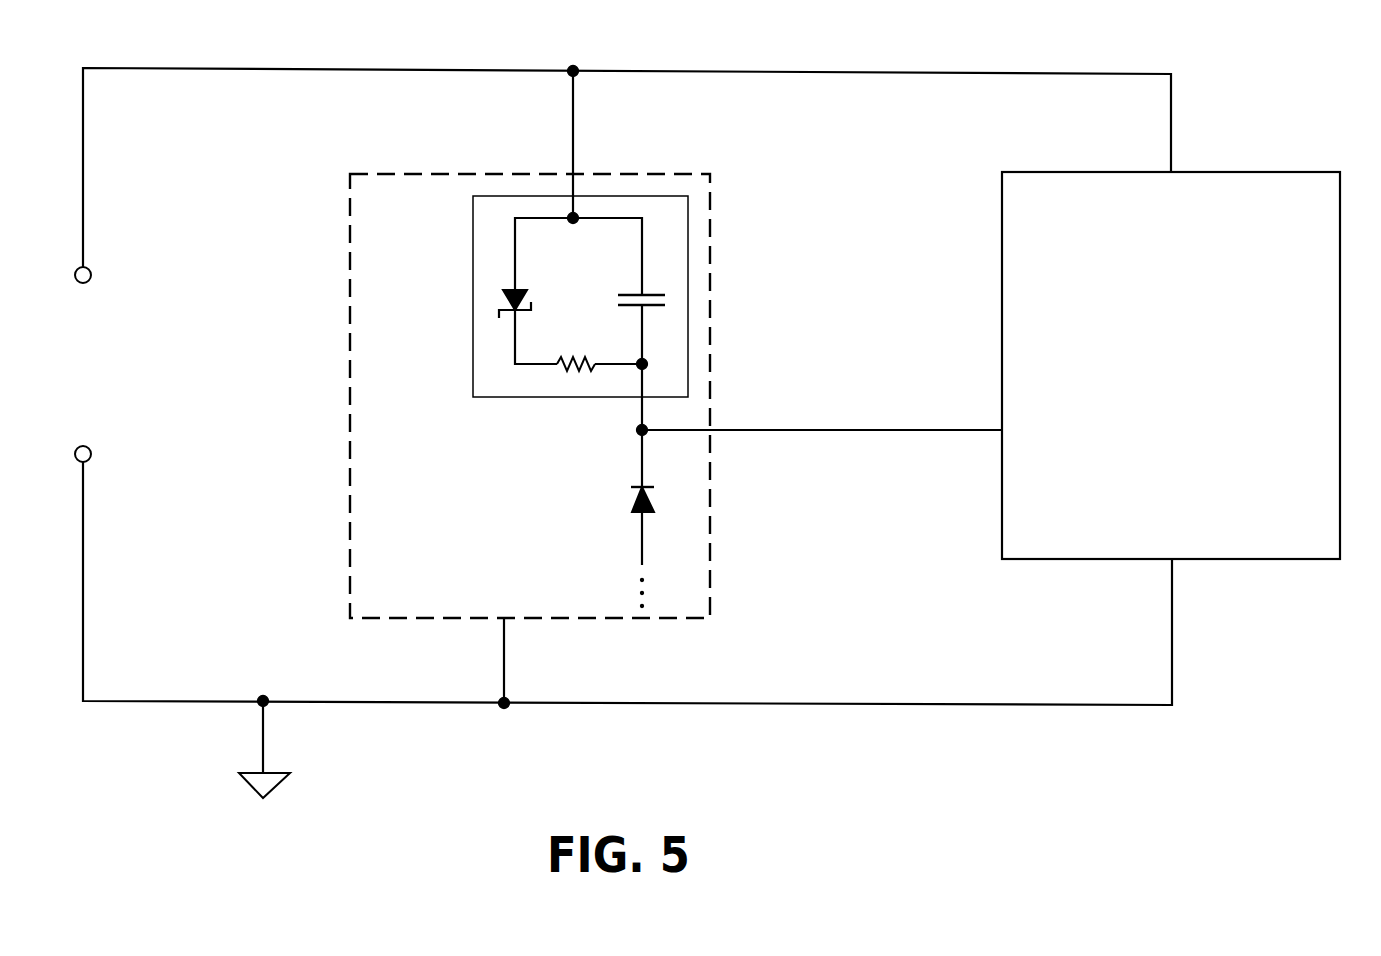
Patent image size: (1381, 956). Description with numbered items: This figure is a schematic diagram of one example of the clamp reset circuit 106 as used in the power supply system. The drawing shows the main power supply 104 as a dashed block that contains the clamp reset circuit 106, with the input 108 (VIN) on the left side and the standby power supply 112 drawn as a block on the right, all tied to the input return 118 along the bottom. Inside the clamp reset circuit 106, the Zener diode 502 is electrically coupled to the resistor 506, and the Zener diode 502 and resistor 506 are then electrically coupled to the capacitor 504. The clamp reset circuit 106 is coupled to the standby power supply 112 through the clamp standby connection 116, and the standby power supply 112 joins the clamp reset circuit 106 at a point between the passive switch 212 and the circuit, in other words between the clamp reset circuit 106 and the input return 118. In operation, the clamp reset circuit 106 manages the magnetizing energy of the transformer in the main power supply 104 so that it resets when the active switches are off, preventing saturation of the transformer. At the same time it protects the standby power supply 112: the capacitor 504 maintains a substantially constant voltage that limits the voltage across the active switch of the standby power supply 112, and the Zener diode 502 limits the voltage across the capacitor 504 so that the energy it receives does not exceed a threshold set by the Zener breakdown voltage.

The main power supply 104 is at (335, 383).
The clamp reset circuit 106 is at (468, 212).
The input 108 is at (123, 357).
The standby power supply 112 is at (1288, 160).
The clamp standby connection 116 is at (829, 413).
The input return 118 is at (238, 760).
The passive switch D1 212 is at (595, 492).
The Zener diode 502 is at (487, 305).
The capacitor 504 is at (668, 300).
The resistor 506 is at (567, 375).